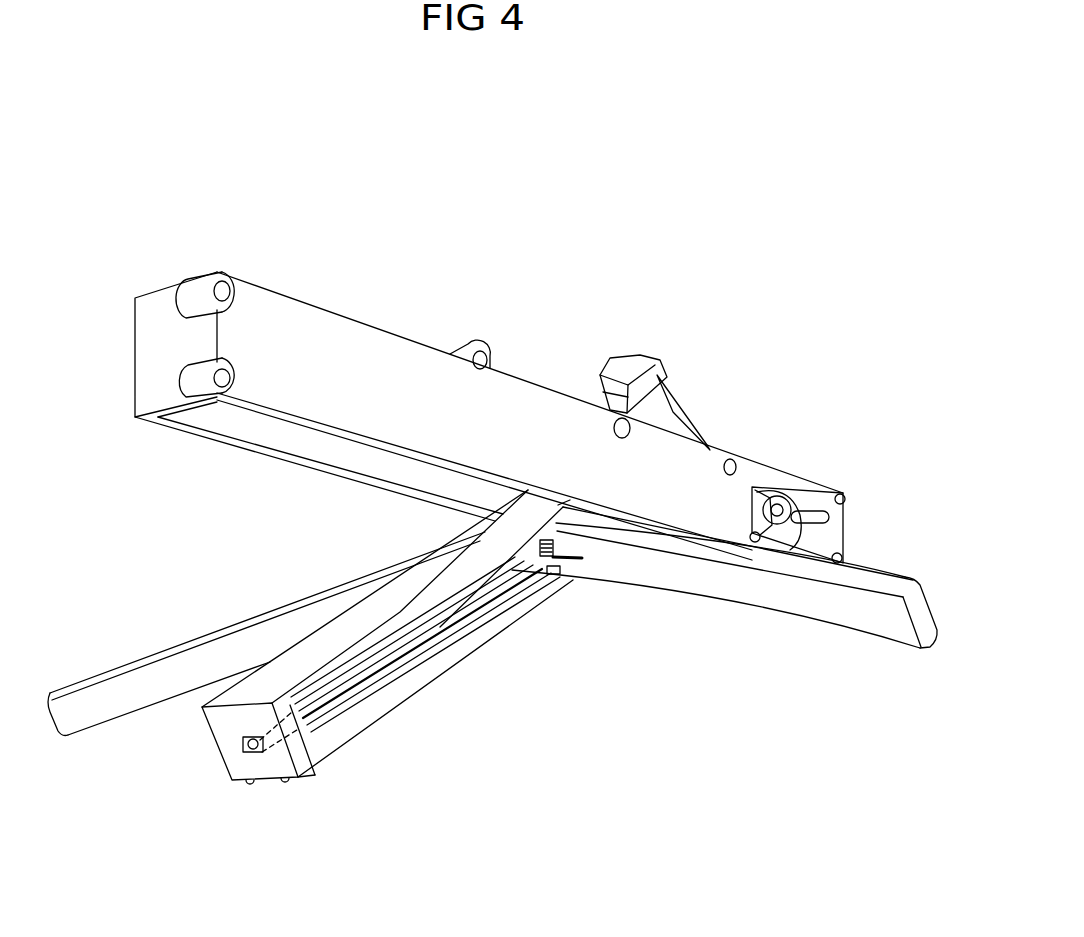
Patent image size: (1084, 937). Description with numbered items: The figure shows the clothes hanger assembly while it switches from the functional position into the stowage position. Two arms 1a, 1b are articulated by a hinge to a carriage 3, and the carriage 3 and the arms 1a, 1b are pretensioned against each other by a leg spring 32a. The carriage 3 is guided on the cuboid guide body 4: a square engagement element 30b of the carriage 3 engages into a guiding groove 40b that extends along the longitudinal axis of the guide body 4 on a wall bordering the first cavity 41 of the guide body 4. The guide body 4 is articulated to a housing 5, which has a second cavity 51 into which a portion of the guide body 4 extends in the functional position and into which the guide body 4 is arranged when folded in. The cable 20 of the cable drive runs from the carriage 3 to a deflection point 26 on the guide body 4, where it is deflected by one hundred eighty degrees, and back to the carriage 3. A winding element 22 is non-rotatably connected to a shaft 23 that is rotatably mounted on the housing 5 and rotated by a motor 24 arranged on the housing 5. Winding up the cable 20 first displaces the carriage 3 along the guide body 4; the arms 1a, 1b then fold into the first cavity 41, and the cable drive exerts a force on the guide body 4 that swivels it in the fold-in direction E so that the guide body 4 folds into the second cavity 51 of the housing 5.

The housing 5 is at (441, 300).
The second cavity 51 is at (240, 423).
The motor 24 is at (675, 412).
The winding element 22 is at (775, 517).
The shaft 23 is at (820, 508).
The arm 1a is at (895, 574).
The arm 1b is at (318, 598).
The fold-in direction E is at (257, 688).
The guide body 4 is at (454, 718).
The first cavity 41 is at (326, 697).
The cable 20 is at (352, 675).
The guiding groove 40b is at (379, 677).
The carriage 3 is at (548, 565).
The leg spring 32a is at (571, 567).
The square engagement element 30b is at (518, 572).
The deflection point 26 is at (250, 752).